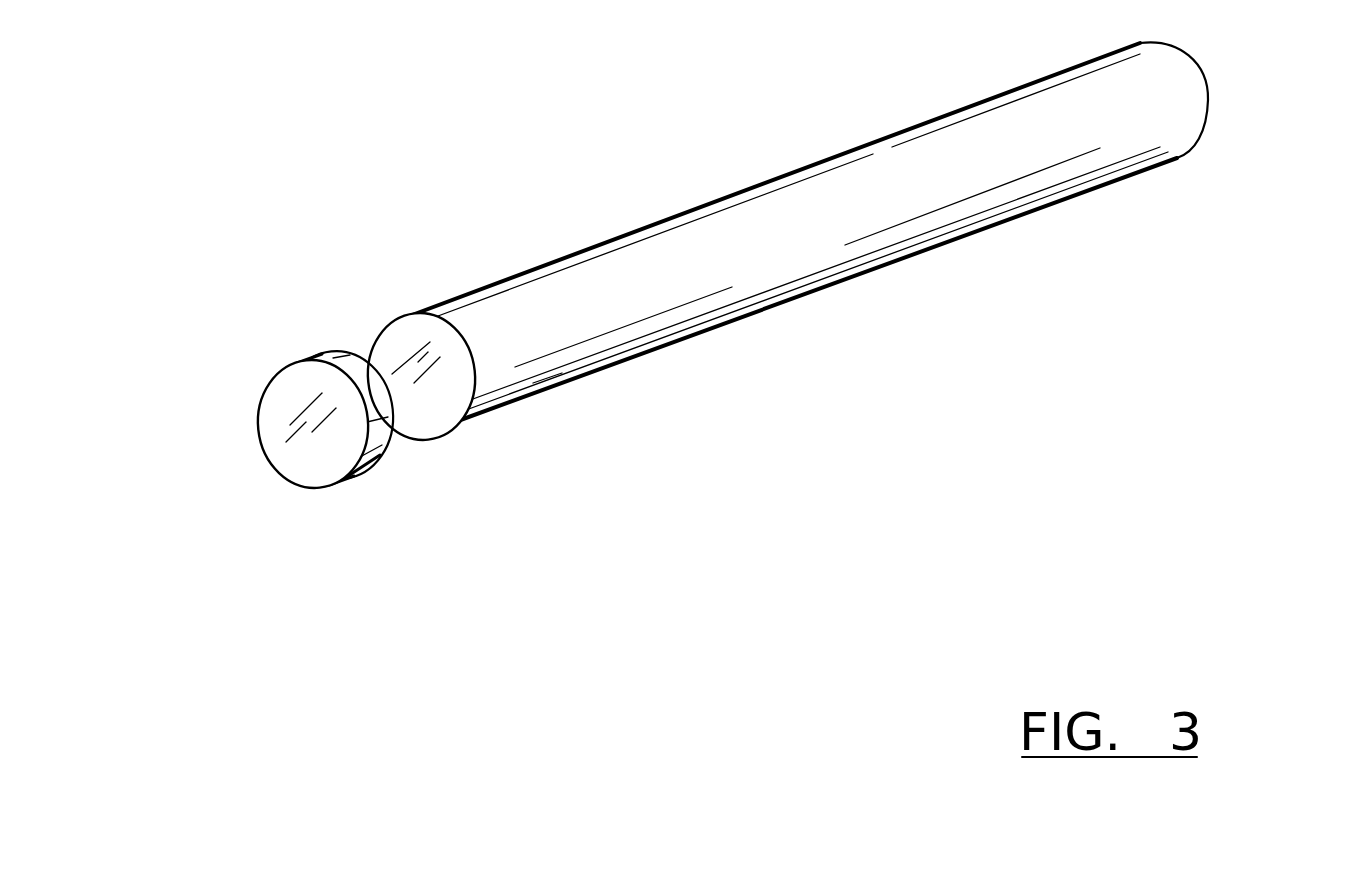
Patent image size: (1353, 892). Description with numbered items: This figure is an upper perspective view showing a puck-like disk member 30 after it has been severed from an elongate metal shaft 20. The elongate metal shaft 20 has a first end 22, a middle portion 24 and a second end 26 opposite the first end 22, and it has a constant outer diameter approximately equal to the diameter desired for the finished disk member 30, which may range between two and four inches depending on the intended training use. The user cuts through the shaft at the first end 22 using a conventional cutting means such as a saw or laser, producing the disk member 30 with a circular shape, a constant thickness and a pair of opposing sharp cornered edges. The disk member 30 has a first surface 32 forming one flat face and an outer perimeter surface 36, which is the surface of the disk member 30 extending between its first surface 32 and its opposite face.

The elongate metal shaft 20 is at (872, 225).
The first end 22 is at (455, 394).
The middle portion 24 is at (862, 221).
The second end 26 is at (1208, 102).
The disk member 30 is at (412, 394).
The first surface 32 is at (310, 477).
The outer perimeter surface 36 is at (373, 445).